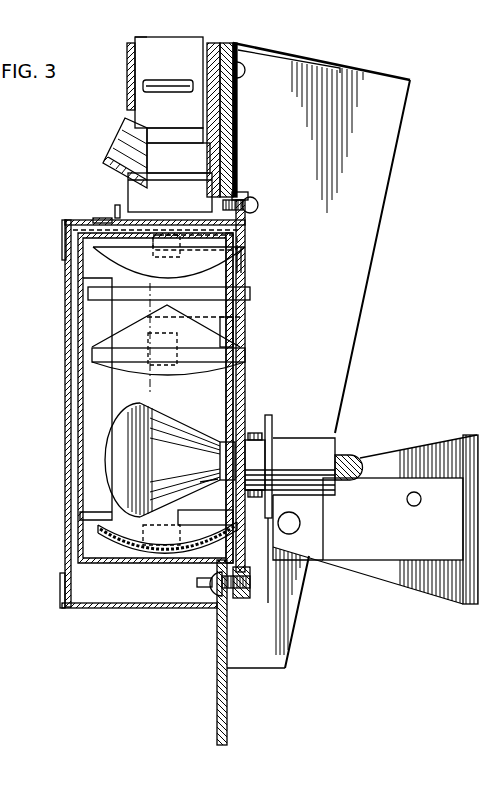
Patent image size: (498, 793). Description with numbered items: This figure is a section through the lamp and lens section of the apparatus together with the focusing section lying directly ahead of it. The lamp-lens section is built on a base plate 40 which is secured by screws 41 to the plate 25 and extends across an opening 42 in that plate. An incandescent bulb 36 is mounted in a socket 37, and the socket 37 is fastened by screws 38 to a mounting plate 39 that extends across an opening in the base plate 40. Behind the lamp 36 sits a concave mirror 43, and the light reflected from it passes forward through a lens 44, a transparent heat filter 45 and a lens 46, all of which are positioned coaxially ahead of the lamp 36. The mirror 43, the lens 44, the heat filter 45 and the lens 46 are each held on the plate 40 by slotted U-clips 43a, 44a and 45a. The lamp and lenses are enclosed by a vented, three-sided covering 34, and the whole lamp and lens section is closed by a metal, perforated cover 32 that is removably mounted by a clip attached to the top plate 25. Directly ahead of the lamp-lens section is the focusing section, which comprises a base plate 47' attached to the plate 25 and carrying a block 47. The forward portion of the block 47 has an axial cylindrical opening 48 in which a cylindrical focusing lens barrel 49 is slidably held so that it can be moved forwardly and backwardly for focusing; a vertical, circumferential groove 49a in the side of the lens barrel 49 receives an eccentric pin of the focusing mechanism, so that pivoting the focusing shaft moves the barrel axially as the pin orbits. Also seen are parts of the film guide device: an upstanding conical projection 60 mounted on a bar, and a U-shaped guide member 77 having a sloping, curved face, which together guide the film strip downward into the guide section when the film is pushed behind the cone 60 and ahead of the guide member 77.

The axial cylindrical opening 48 is at (145, 40).
The cylindrical focusing lens barrel 49 is at (190, 47).
The block 47 is at (111, 76).
The vertical circumferential groove 49a is at (168, 80).
The U-shaped guide member 77 is at (112, 148).
The conical projection 60 is at (115, 216).
The base plate 47' is at (243, 120).
The top plate 25 is at (228, 147).
The screws 41 is at (243, 197).
The lens 46 is at (210, 263).
The transparent heat filter 45 is at (220, 297).
The slotted U-clip 45a is at (155, 306).
The lens 44 is at (105, 365).
The slotted U-clip 44a is at (192, 383).
The base plate 40 is at (242, 387).
The perforated cover 32 is at (67, 430).
The vented three-sided covering 34 is at (80, 463).
The screws 38 is at (260, 425).
The mounting plate 39 is at (240, 425).
The incandescent bulb 36 is at (181, 472).
The socket 37 is at (311, 474).
The slotted U-clip 43a is at (220, 487).
The concave mirror 43 is at (132, 553).
The opening 42 is at (200, 562).